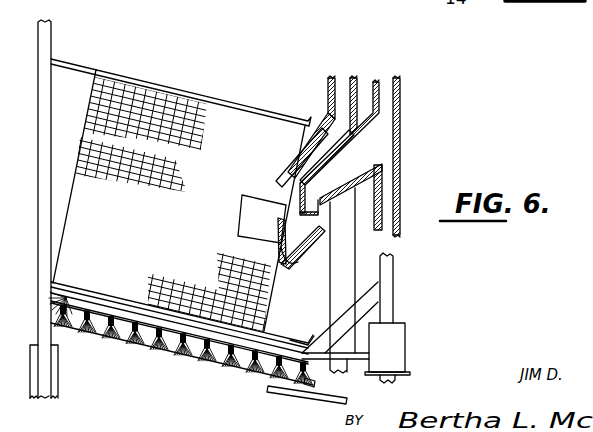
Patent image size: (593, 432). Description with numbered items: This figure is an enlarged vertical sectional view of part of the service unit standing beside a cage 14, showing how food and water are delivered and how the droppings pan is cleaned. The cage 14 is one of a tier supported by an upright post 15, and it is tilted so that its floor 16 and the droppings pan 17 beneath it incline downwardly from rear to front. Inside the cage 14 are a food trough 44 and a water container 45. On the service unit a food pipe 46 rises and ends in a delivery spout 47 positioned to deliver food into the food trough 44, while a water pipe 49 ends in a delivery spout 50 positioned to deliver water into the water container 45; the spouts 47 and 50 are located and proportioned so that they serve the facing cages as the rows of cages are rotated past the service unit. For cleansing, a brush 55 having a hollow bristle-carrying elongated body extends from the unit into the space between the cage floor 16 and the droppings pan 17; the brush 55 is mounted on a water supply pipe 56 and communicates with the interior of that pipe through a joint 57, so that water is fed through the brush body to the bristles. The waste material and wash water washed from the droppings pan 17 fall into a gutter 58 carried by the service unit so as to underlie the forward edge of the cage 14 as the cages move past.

The cage 14 is at (160, 97).
The upright post 15 is at (47, 48).
The cage floor 16 is at (268, 340).
The droppings pan 17 is at (231, 80).
The food trough 44 is at (298, 262).
The water container 45 is at (250, 225).
The food pipe 46 is at (400, 195).
The food delivery spout 47 is at (346, 150).
The water pipe 49 is at (330, 87).
The water delivery spout 50 is at (290, 158).
The brush 55 is at (74, 330).
The water supply pipe 56 is at (393, 277).
The joint 57 is at (405, 352).
The gutter 58 is at (302, 400).